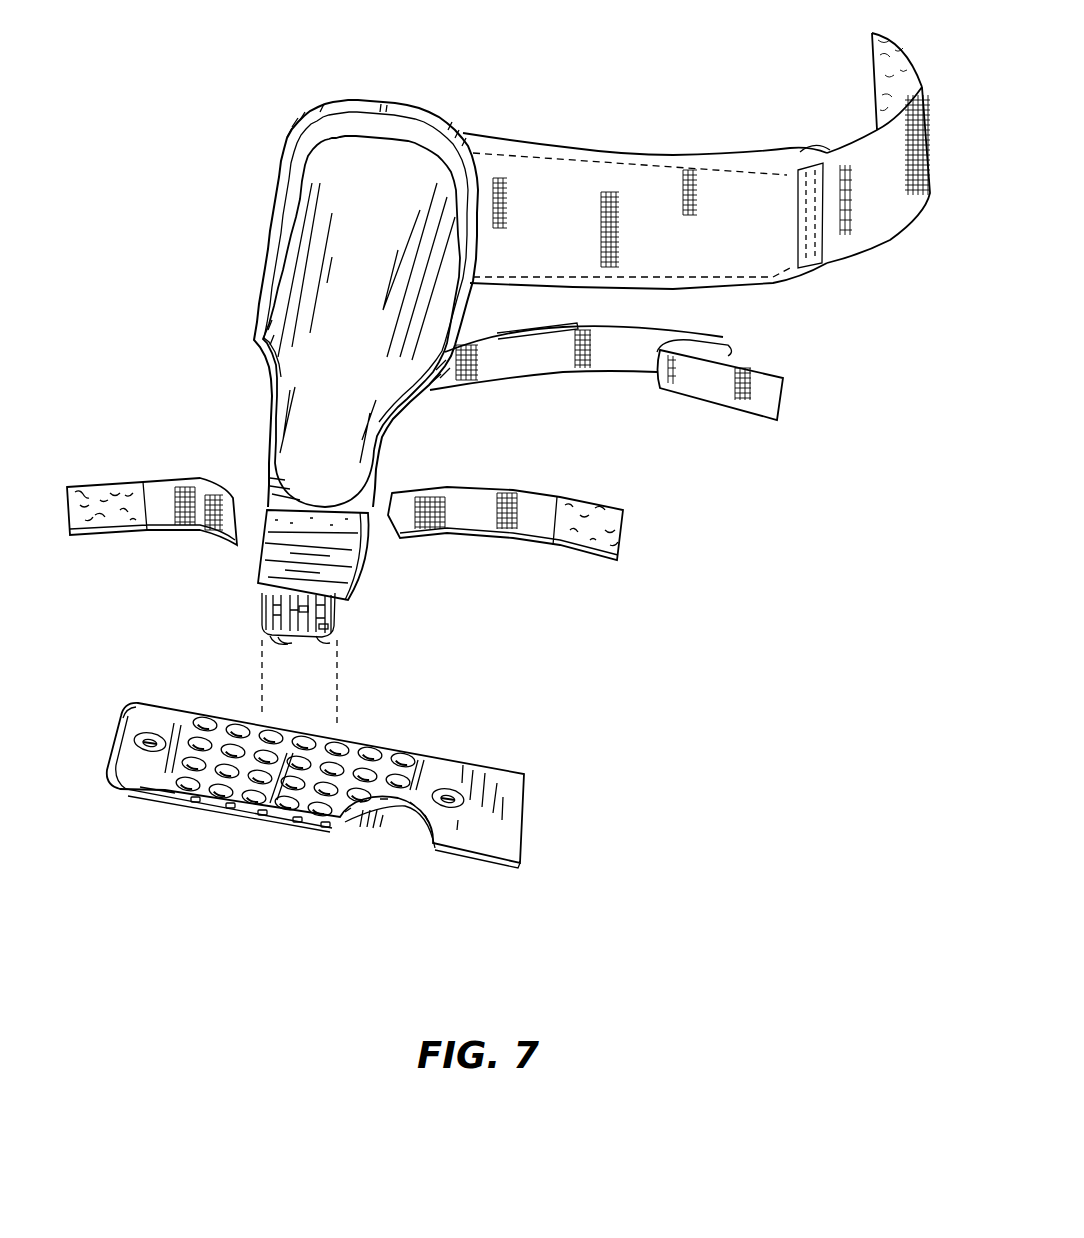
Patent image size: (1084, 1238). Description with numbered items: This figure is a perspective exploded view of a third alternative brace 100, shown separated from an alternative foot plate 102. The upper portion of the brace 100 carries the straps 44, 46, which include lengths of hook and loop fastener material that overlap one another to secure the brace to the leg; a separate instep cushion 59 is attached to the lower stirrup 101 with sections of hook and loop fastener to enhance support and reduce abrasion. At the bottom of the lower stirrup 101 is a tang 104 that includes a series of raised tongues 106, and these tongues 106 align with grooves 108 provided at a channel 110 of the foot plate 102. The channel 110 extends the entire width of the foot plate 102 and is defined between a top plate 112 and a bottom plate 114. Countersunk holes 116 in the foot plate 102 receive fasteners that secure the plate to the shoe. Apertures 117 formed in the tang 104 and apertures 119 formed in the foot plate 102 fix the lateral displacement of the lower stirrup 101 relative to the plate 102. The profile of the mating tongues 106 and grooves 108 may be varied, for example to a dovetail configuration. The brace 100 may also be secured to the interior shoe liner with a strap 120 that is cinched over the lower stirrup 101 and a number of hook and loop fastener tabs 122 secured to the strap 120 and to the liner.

The strap 44 is at (688, 152).
The strap 46 is at (543, 372).
The instep cushion 59 is at (363, 588).
The brace 100 is at (240, 316).
The lower stirrup 101 is at (242, 617).
The foot plate 102 is at (296, 795).
The tang 104 is at (323, 642).
The raised tongues 106 is at (287, 639).
The grooves 108 is at (250, 807).
The channel 110 is at (400, 810).
The top plate 112 is at (140, 705).
The bottom plate 114 is at (175, 800).
The countersunk holes 116 is at (143, 745).
The apertures 117 is at (320, 630).
The apertures 119 is at (367, 752).
The strap 120 is at (103, 482).
The hook and loop fastener tabs 122 is at (92, 525).